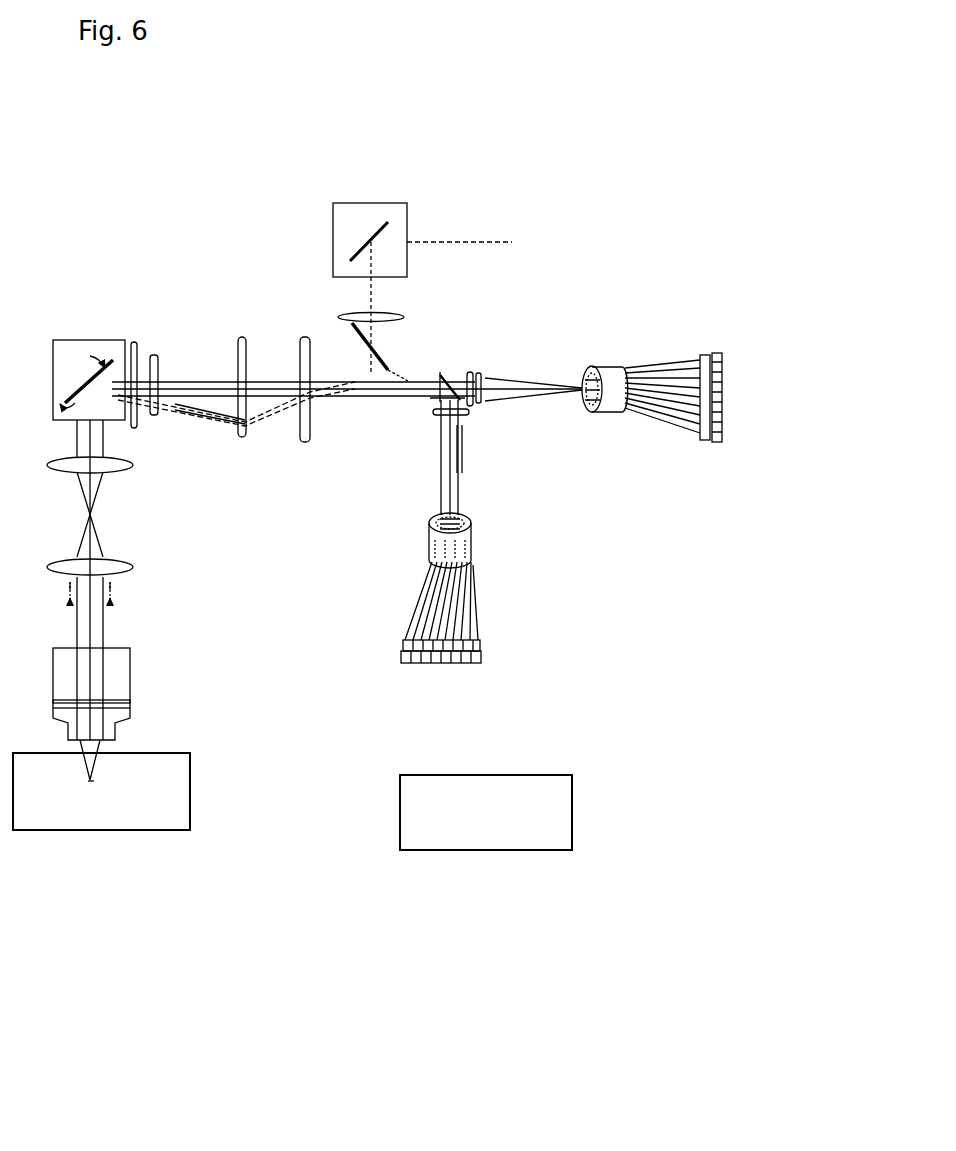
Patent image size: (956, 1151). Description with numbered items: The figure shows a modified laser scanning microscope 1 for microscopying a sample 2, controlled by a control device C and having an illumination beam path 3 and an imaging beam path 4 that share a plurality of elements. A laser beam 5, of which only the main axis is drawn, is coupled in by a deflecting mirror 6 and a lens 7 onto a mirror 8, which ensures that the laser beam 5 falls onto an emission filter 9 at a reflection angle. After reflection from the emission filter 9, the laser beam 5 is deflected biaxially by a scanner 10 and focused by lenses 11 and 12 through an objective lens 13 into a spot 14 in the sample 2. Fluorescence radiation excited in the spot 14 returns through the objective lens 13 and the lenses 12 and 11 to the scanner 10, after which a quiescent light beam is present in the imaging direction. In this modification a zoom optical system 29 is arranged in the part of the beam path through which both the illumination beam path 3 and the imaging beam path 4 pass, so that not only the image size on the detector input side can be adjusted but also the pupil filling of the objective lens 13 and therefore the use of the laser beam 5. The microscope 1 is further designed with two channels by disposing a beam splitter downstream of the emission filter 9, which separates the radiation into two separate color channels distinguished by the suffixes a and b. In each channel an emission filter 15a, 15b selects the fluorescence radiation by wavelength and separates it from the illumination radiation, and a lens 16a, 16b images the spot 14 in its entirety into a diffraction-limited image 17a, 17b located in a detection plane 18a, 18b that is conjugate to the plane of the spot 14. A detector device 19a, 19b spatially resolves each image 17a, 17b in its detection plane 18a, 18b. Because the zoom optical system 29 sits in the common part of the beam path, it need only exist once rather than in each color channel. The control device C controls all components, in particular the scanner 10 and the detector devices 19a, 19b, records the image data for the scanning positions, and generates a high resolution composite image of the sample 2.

The laser scanning microscope 1 is at (405, 920).
The sample 2 is at (175, 820).
The illumination beam path 3 is at (120, 270).
The imaging beam path 4 is at (565, 578).
The laser beam 5 is at (480, 242).
The deflecting mirror 6 is at (350, 202).
The lens 7 is at (345, 318).
The mirror 8 is at (350, 323).
The emission filter 9 is at (427, 385).
The scanner 10 is at (70, 345).
The lens 11 is at (133, 462).
The lens 12 is at (133, 565).
The objective lens 13 is at (130, 712).
The spot 14 is at (92, 781).
The emission filter 15a is at (468, 372).
The emission filter 15b is at (462, 415).
The lens 16a is at (480, 373).
The lens 16b is at (462, 435).
The diffraction-limited image 17a is at (585, 385).
The diffraction-limited image 17b is at (470, 520).
The detection plane 18a is at (598, 405).
The detection plane 18b is at (430, 523).
The detector device 19a is at (658, 335).
The detector device 19b is at (398, 592).
The zoom optical system 29 is at (233, 455).
The control device C is at (560, 806).